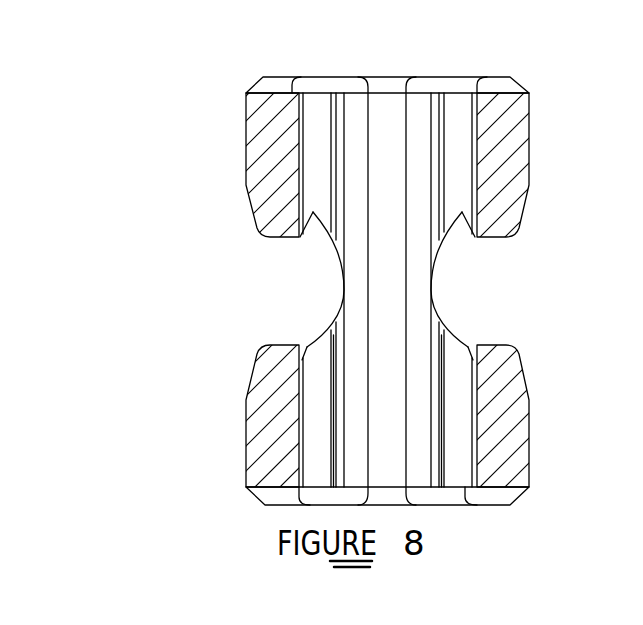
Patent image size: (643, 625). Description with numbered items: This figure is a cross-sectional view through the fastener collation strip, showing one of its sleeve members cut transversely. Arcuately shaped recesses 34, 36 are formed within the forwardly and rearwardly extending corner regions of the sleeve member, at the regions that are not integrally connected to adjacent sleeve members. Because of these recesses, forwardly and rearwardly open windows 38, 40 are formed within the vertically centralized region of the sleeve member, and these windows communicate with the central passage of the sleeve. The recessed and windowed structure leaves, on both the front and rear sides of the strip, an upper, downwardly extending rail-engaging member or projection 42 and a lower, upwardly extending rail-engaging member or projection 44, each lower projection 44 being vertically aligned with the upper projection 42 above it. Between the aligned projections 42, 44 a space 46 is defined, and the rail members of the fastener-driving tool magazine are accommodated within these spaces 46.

The arcuately shaped recess 34 is at (430, 317).
The arcuately shaped recess 36 is at (345, 287).
The forwardly open window 38 is at (477, 265).
The rearwardly open window 40 is at (303, 260).
The upper, downwardly extending rail-engaging member or projection 42 is at (276, 222).
The lower, upwardly extending rail-engaging member or projection 44 is at (267, 357).
The space 46 is at (268, 323).